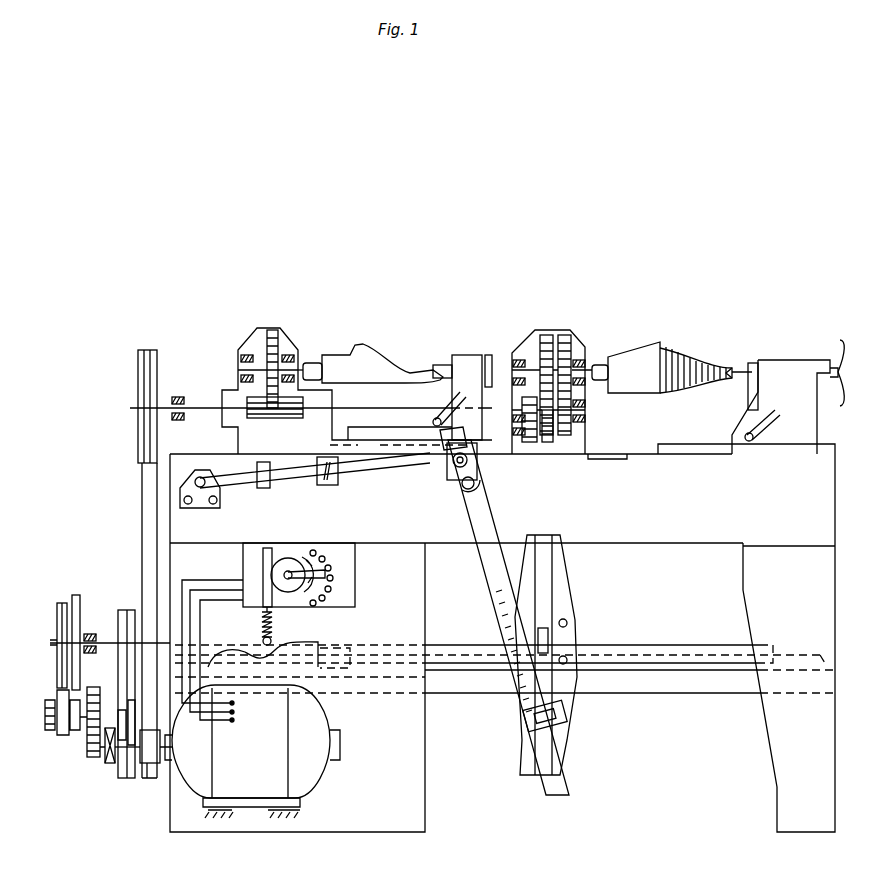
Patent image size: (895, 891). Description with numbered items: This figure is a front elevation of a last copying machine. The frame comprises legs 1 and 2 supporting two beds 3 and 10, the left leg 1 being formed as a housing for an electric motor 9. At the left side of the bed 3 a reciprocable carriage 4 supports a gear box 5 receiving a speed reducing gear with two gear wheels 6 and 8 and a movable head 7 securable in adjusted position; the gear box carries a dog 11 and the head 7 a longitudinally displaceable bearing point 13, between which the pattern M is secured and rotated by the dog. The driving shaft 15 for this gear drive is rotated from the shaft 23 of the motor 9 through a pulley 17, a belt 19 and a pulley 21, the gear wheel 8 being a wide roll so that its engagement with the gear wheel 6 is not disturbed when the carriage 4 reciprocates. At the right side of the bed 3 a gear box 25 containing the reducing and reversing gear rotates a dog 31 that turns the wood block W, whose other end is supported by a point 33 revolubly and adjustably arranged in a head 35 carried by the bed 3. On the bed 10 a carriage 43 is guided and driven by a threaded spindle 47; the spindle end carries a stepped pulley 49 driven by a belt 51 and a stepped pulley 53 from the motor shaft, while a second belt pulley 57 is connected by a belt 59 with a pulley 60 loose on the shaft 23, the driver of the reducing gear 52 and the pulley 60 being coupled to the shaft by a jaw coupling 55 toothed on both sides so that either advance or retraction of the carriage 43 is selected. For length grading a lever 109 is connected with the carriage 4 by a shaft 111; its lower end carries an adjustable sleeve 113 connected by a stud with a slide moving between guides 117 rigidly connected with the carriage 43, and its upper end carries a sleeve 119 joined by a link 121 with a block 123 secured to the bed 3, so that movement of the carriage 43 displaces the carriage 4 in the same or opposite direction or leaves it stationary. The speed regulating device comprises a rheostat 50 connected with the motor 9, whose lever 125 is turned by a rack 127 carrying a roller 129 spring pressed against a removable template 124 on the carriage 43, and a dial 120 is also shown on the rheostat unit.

The leg 1 is at (297, 643).
The leg 2 is at (746, 638).
The bed 3 is at (456, 494).
The carriage 4 is at (300, 554).
The gear box 5 is at (255, 345).
The gear wheel 6 is at (274, 337).
The movable head 7 is at (462, 397).
The gear wheel 8 is at (292, 418).
The electric motor 9 is at (252, 693).
The bed 10 is at (505, 681).
The dog 11 is at (308, 362).
The bearing point 13 is at (440, 365).
The driving shaft 15 is at (196, 405).
The pulley 17 is at (158, 362).
The belt 19 is at (150, 535).
The pulley 21 is at (157, 768).
The motor shaft 23 is at (157, 733).
The gear box 25 is at (522, 350).
The dog 31 is at (596, 365).
The point 33 is at (744, 366).
The head 35 is at (788, 397).
The carriage 43 is at (633, 650).
The threaded spindle 47 is at (162, 641).
The stepped pulley 49 is at (74, 595).
The rheostat 50 is at (299, 575).
The belt 51 is at (66, 617).
The reducing gear 52 is at (88, 737).
The stepped pulley 53 is at (70, 697).
The jaw coupling 55 is at (110, 765).
The second belt pulley 57 is at (118, 665).
The belt 59 is at (131, 707).
The pulley 60 is at (122, 712).
The lever 109 is at (490, 533).
The shaft 111 is at (482, 483).
The sleeve 113 is at (565, 723).
The guides 117 is at (555, 586).
The sleeve 119 is at (452, 477).
The dial 120 is at (293, 592).
The link 121 is at (375, 470).
The block 123 is at (198, 508).
The template 124 is at (262, 668).
The lever 125 is at (315, 575).
The rack 127 is at (267, 573).
The roller 129 is at (262, 639).
The pattern M is at (368, 358).
The work or wood block W is at (653, 355).